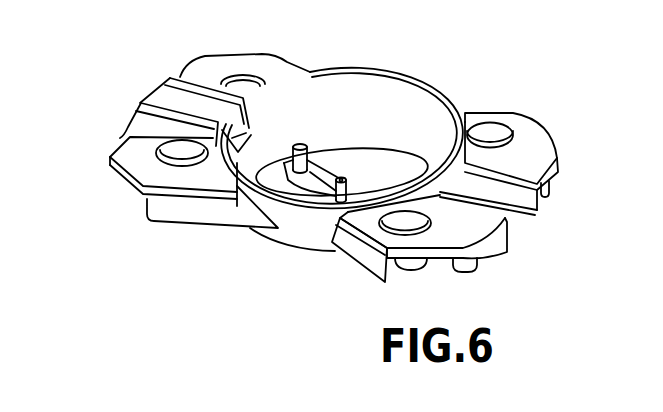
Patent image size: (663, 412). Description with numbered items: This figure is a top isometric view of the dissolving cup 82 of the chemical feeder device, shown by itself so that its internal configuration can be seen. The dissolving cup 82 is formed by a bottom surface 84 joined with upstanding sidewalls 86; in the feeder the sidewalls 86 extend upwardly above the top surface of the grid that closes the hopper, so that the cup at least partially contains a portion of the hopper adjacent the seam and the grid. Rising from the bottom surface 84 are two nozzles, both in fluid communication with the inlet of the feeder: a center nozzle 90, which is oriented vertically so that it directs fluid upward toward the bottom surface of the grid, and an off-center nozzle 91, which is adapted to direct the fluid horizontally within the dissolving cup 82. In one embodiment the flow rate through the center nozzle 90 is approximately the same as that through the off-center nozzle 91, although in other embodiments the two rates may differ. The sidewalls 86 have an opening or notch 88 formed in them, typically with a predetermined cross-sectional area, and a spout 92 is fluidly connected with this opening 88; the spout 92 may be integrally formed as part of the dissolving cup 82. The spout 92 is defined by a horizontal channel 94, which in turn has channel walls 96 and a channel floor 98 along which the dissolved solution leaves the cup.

The dissolving cup 82 is at (451, 60).
The bottom surface 84 is at (382, 160).
The sidewalls 86 is at (368, 87).
The opening or notch 88 is at (220, 163).
The center nozzle 90 is at (340, 177).
The off-center nozzle 91 is at (311, 160).
The spout 92 is at (170, 78).
The horizontal channel 94 is at (141, 94).
The channel walls 96 is at (145, 121).
The channel floor 98 is at (250, 133).